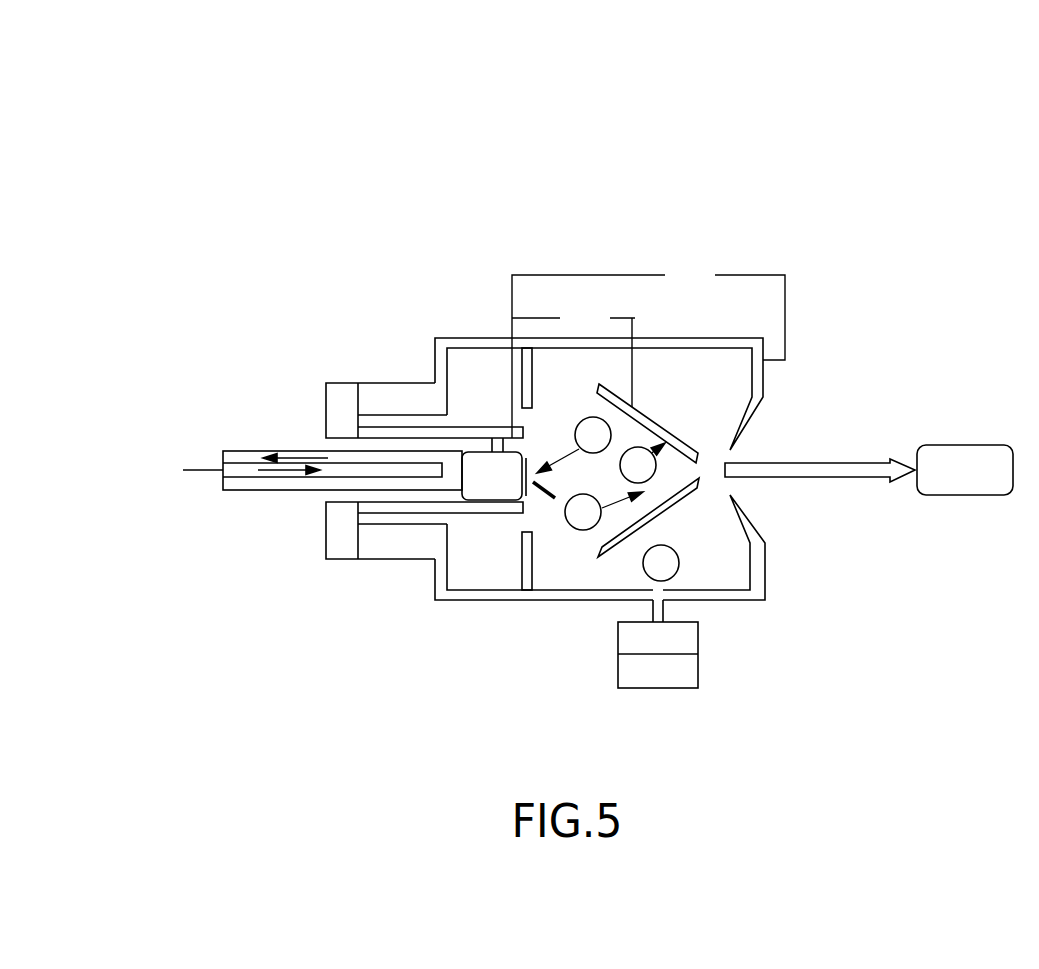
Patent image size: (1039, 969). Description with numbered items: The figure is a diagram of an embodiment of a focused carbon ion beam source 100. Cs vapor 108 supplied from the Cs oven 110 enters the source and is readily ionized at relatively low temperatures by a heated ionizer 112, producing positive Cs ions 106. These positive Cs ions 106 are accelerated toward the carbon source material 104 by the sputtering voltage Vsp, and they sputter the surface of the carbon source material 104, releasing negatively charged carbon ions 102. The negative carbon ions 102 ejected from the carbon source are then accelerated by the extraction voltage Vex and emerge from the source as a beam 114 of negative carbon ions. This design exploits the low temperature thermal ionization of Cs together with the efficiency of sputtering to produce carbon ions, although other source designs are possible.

The focused carbon ion beam source 100 is at (182, 135).
The negatively charged carbon ions 102 is at (973, 450).
The carbon source material 104 is at (467, 458).
The positive Cs ions 106 is at (558, 408).
The Cs vapor 108 is at (697, 562).
The Cs oven 110 is at (618, 660).
The heated ionizer 112 is at (658, 418).
The beam of negative carbon ions 114 is at (806, 462).